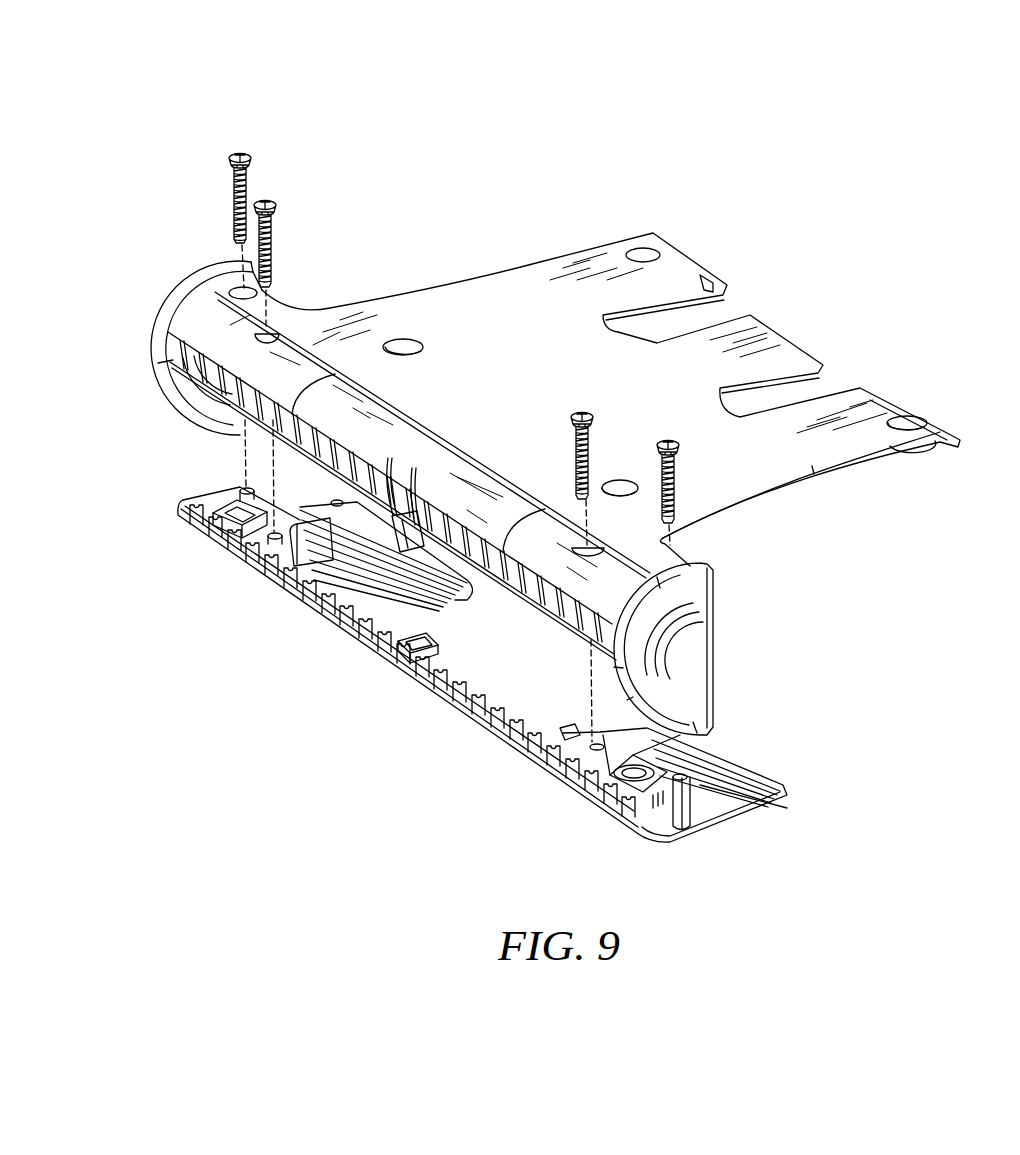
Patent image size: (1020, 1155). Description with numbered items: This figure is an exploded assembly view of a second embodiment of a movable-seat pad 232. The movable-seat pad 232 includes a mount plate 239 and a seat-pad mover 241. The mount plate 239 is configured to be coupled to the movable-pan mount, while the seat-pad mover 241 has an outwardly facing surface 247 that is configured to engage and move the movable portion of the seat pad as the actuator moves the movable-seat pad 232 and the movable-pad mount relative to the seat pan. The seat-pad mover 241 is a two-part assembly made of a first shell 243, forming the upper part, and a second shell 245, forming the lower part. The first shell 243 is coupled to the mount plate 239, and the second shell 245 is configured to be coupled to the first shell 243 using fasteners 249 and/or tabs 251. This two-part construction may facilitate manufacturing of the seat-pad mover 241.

The movable-seat pad 232 is at (252, 78).
The mount plate 239 is at (541, 285).
The seat-pad mover 241 is at (118, 379).
The first shell 243 is at (157, 315).
The second shell 245 is at (178, 519).
The outwardly facing surface 247 is at (337, 507).
The fasteners 249 is at (264, 196).
The tabs 251 is at (406, 547).